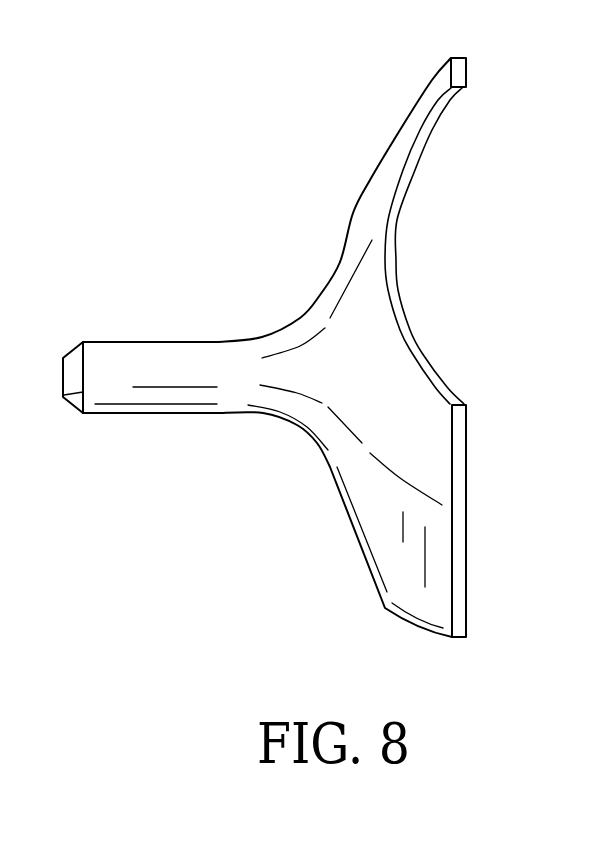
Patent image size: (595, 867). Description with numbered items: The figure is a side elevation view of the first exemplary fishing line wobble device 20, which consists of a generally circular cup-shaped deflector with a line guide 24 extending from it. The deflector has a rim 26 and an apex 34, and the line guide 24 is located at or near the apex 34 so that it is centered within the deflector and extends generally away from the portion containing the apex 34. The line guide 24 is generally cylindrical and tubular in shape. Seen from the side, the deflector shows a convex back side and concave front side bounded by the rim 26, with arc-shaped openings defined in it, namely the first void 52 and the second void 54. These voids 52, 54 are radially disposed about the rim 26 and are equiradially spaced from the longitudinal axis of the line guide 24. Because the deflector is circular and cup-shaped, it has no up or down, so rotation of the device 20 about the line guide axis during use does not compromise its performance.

The fishing line wobble device 20 is at (313, 367).
The line guide 24 is at (120, 358).
The rim 26 is at (460, 73).
The apex 34 is at (322, 293).
The first void 52 is at (420, 265).
The second void 54 is at (390, 621).